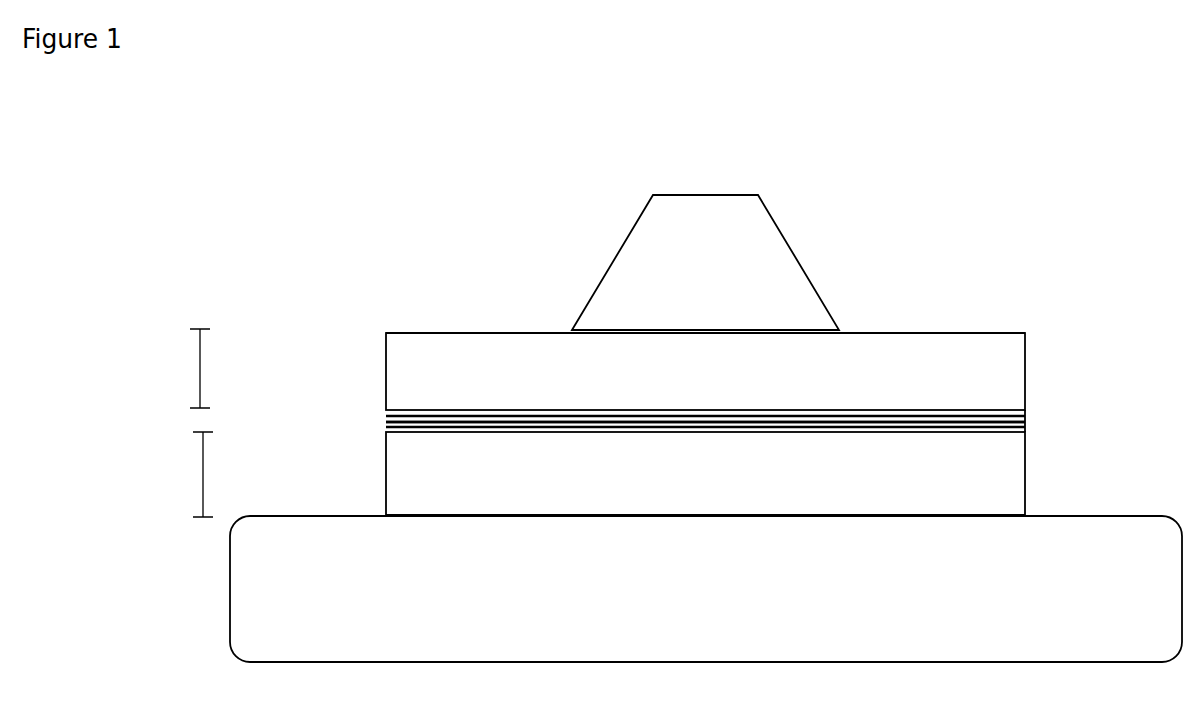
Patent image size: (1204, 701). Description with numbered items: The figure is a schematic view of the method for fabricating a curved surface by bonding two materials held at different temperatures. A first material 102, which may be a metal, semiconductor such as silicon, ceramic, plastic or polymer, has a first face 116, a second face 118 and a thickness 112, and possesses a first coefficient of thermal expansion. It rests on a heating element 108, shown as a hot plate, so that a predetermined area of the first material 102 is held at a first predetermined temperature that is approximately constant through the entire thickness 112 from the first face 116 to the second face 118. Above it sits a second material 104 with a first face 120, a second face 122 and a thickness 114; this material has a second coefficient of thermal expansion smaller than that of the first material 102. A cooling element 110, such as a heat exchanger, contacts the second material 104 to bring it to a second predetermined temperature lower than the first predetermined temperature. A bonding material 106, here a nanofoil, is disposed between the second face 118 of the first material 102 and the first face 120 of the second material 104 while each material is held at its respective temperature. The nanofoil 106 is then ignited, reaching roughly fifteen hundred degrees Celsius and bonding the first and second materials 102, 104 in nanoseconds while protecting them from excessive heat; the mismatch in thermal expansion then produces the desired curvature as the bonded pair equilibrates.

The first material 102 is at (1008, 469).
The second material 104 is at (408, 377).
The bonding material 106 is at (383, 423).
The heating element 108 is at (260, 593).
The cooling element 110 is at (657, 253).
The thickness 112 is at (203, 472).
The thickness 114 is at (197, 362).
The first face 116 is at (1013, 515).
The second face 118 is at (1028, 424).
The first face 120 is at (400, 408).
The second face 122 is at (415, 332).